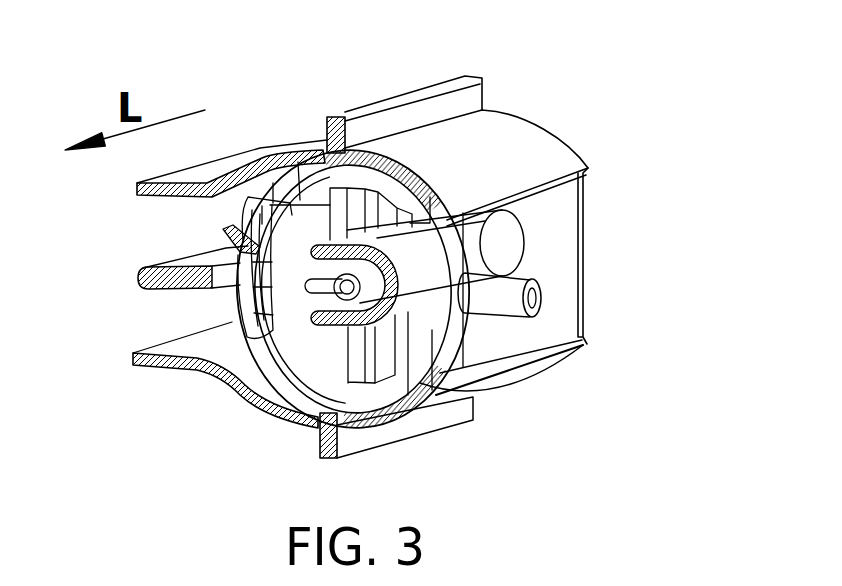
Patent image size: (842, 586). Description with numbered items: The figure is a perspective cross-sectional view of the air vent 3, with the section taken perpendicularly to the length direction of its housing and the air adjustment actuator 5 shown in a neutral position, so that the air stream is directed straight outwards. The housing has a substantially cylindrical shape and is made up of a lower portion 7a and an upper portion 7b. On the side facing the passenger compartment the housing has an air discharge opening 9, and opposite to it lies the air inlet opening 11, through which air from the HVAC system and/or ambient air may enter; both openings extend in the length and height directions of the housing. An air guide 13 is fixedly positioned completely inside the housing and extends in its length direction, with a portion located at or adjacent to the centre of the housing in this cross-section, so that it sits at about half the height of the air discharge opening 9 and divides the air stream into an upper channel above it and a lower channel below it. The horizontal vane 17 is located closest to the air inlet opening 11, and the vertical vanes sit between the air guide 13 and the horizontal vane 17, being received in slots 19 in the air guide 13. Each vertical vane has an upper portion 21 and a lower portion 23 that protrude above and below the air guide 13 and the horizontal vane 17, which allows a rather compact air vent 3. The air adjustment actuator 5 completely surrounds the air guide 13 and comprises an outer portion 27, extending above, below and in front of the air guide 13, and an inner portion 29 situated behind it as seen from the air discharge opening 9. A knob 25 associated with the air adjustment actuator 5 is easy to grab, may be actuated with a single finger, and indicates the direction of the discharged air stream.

The air vent 3 is at (216, 60).
The air adjustment actuator 5 is at (363, 393).
The lower portion 7a is at (150, 367).
The upper portion 7b is at (268, 152).
The air discharge opening 9 is at (613, 239).
The air inlet opening 11 is at (116, 229).
The air guide 13 is at (505, 248).
The horizontal vane 17 is at (140, 277).
The slots 19 is at (385, 210).
The upper portion 21 is at (360, 207).
The lower portion 23 is at (420, 377).
The knob 25 is at (541, 297).
The outer portion 27 is at (402, 380).
The inner portion 29 is at (290, 291).